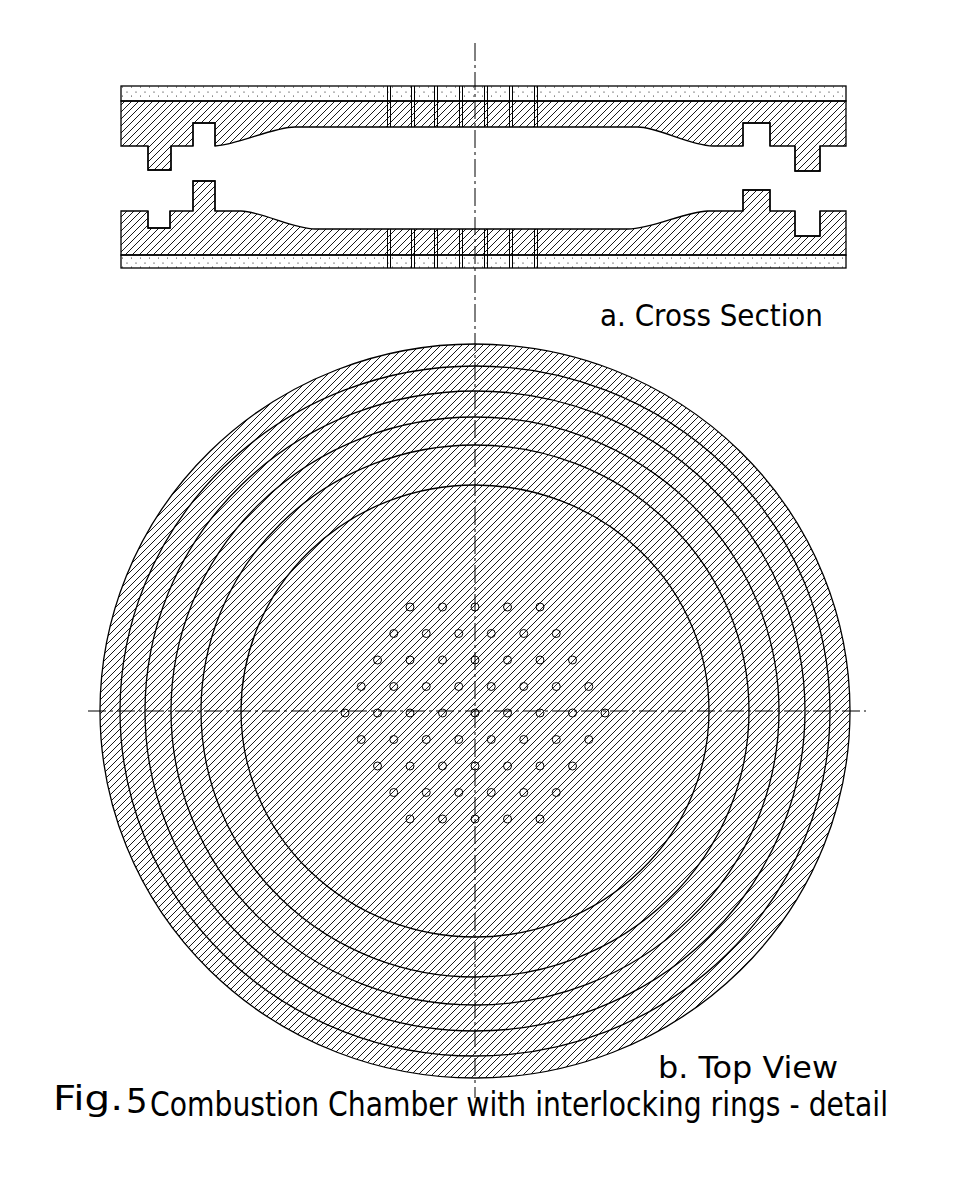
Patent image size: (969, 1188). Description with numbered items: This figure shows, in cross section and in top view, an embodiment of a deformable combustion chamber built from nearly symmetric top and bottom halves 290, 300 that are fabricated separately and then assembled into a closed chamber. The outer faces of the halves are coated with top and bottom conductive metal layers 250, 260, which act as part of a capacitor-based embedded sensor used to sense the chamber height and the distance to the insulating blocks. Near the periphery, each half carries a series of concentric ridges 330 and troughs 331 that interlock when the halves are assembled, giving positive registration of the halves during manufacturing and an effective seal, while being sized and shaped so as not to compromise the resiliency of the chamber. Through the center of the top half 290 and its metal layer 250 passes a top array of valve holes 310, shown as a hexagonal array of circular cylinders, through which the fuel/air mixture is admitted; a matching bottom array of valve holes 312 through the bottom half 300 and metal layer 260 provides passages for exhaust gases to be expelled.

The top conductive metal layer 250 is at (587, 90).
The bottom conductive metal layer 260 is at (327, 258).
The top half of combustion chamber 290 is at (150, 100).
The bottom half of combustion chamber 300 is at (237, 230).
The top array of valve holes 310 is at (413, 82).
The bottom array of valve holes 312 is at (408, 220).
The interlocking ridges 330 is at (150, 152).
The interlocking troughs 331 is at (200, 130).